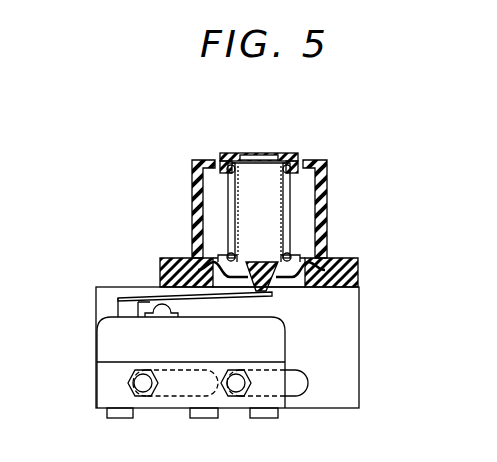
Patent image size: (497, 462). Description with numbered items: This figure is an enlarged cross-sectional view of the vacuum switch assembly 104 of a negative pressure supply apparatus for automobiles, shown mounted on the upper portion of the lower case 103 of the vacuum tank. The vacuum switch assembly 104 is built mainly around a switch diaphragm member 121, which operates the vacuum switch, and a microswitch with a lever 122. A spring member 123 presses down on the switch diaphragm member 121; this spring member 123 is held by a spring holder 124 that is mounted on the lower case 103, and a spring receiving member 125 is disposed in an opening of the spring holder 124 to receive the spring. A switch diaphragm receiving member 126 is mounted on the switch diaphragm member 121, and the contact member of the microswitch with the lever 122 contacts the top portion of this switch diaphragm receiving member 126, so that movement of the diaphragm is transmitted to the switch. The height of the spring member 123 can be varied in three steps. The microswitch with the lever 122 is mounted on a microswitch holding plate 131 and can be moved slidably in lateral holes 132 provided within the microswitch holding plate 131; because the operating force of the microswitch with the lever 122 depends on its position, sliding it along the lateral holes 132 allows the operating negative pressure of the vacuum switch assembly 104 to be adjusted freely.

The lower case 103 is at (293, 253).
The vacuum switch assembly 104 is at (250, 191).
The switch diaphragm member 121 is at (300, 263).
The microswitch with a lever 122 is at (105, 352).
The spring member 123 is at (288, 210).
The spring holder 124 is at (323, 167).
The spring receiving member 125 is at (288, 153).
The switch diaphragm receiving member 126 is at (256, 260).
The microswitch holding plate 131 is at (230, 367).
The lateral holes 132 is at (303, 397).